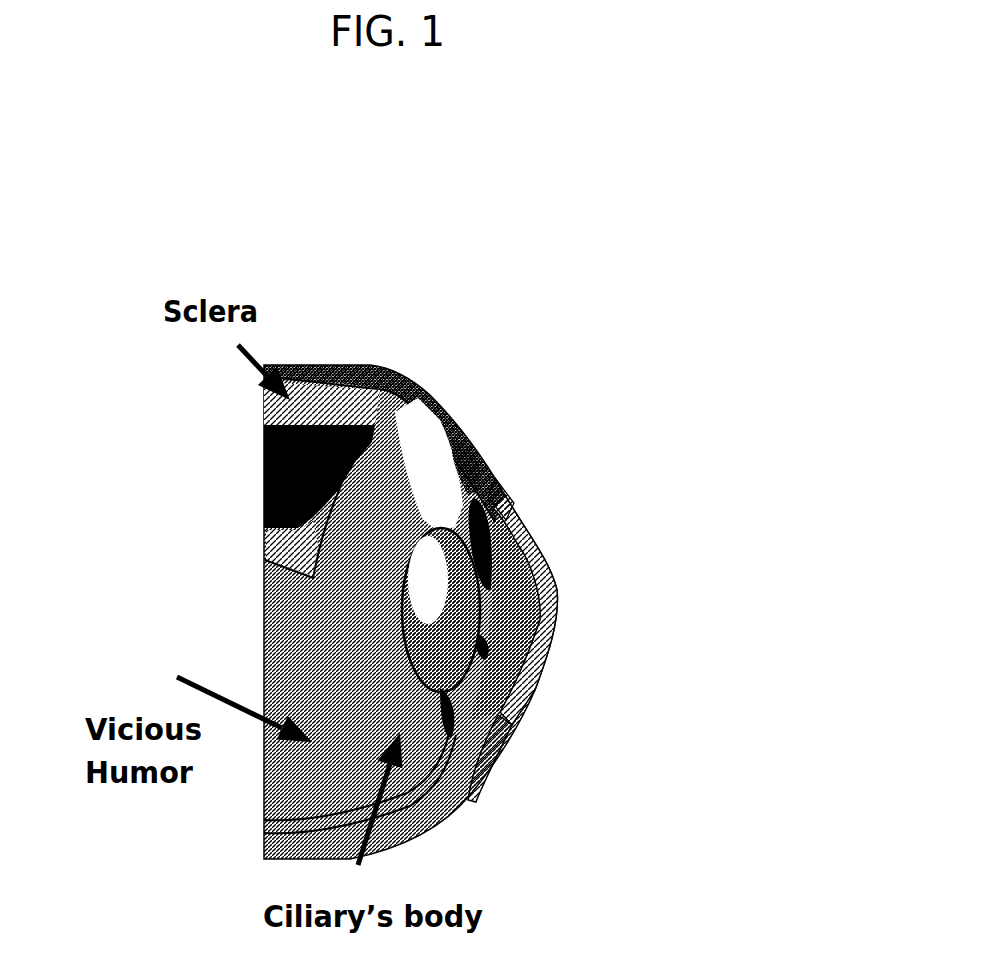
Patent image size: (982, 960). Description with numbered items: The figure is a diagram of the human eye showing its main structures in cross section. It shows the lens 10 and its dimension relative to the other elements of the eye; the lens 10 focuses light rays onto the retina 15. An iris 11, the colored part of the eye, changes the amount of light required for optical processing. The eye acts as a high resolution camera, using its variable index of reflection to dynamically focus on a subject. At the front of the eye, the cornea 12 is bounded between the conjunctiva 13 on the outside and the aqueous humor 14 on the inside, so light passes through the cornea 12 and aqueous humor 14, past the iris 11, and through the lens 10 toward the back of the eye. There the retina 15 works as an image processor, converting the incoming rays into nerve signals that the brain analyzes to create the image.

The lens 10 is at (421, 577).
The iris 11 is at (504, 686).
The cornea 12 is at (563, 580).
The conjunctiva 13 is at (521, 463).
The aqueous humor 14 is at (485, 506).
The retina 15 is at (232, 517).